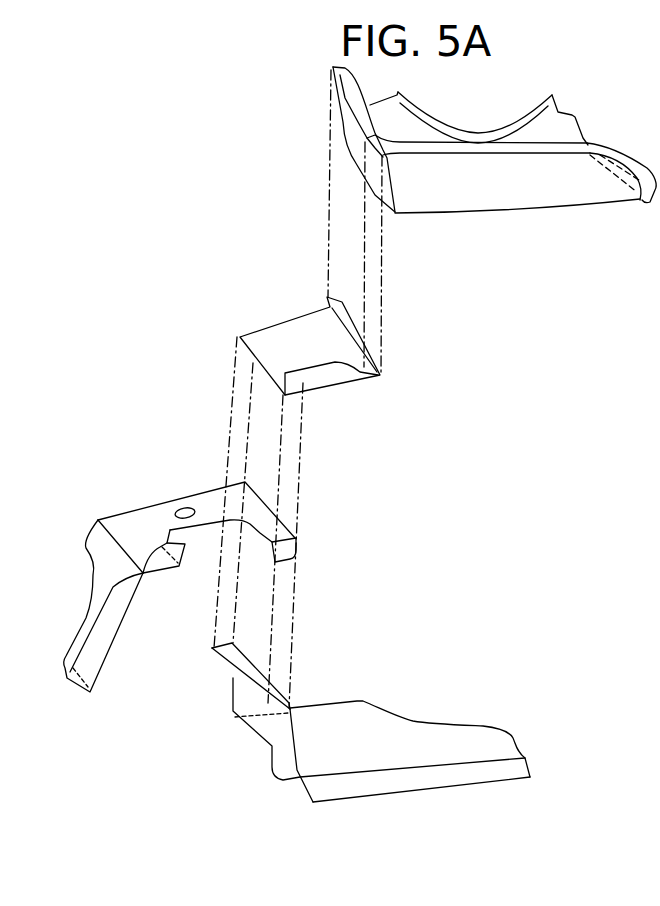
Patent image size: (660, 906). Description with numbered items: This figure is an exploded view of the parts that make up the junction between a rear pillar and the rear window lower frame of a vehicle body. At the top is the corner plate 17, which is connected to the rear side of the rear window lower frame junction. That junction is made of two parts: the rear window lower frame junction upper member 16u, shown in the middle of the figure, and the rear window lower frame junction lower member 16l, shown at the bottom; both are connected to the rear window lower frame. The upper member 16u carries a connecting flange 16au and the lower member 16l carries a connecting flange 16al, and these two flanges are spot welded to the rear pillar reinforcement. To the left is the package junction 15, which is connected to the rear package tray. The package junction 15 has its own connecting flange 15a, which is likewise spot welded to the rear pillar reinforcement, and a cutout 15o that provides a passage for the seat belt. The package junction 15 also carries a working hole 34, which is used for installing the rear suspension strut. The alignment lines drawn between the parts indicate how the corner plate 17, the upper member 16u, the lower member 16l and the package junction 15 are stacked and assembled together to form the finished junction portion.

The corner plate 17 is at (510, 118).
The rear window lower frame junction upper member 16u is at (285, 328).
The connecting flange 16au is at (330, 380).
The package junction 15 is at (128, 510).
The working hole 34 is at (187, 506).
The cutout 15o is at (203, 530).
The connecting flange 15a is at (160, 563).
The rear window lower frame junction lower member 16l is at (448, 732).
The connecting flange 16al is at (282, 768).